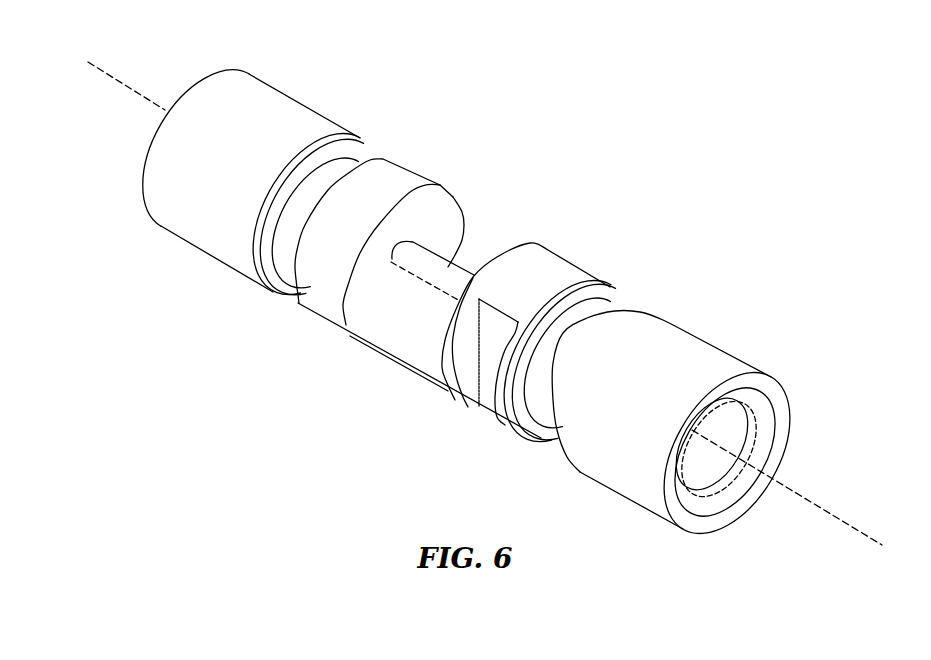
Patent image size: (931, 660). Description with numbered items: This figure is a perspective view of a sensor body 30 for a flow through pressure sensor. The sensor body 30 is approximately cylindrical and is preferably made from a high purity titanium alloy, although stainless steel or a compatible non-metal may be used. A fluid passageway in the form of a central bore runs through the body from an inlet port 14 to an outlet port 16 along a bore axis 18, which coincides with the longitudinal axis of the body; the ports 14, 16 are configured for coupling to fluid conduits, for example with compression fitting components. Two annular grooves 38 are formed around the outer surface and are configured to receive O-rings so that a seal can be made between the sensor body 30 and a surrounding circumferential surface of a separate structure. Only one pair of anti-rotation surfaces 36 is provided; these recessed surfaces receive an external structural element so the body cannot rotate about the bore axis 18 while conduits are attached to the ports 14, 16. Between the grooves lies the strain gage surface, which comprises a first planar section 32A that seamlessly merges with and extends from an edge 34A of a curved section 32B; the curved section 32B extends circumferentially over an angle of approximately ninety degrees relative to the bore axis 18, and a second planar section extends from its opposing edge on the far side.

The inlet port 14 is at (790, 505).
The outlet port 16 is at (132, 141).
The bore axis 18 is at (128, 86).
The sensor body 30 is at (458, 325).
The first planar section 32A is at (392, 343).
The curved section 32B is at (448, 268).
The edge 34A is at (409, 272).
The anti-rotation surfaces 36 is at (491, 378).
The annular grooves 38 is at (337, 172).